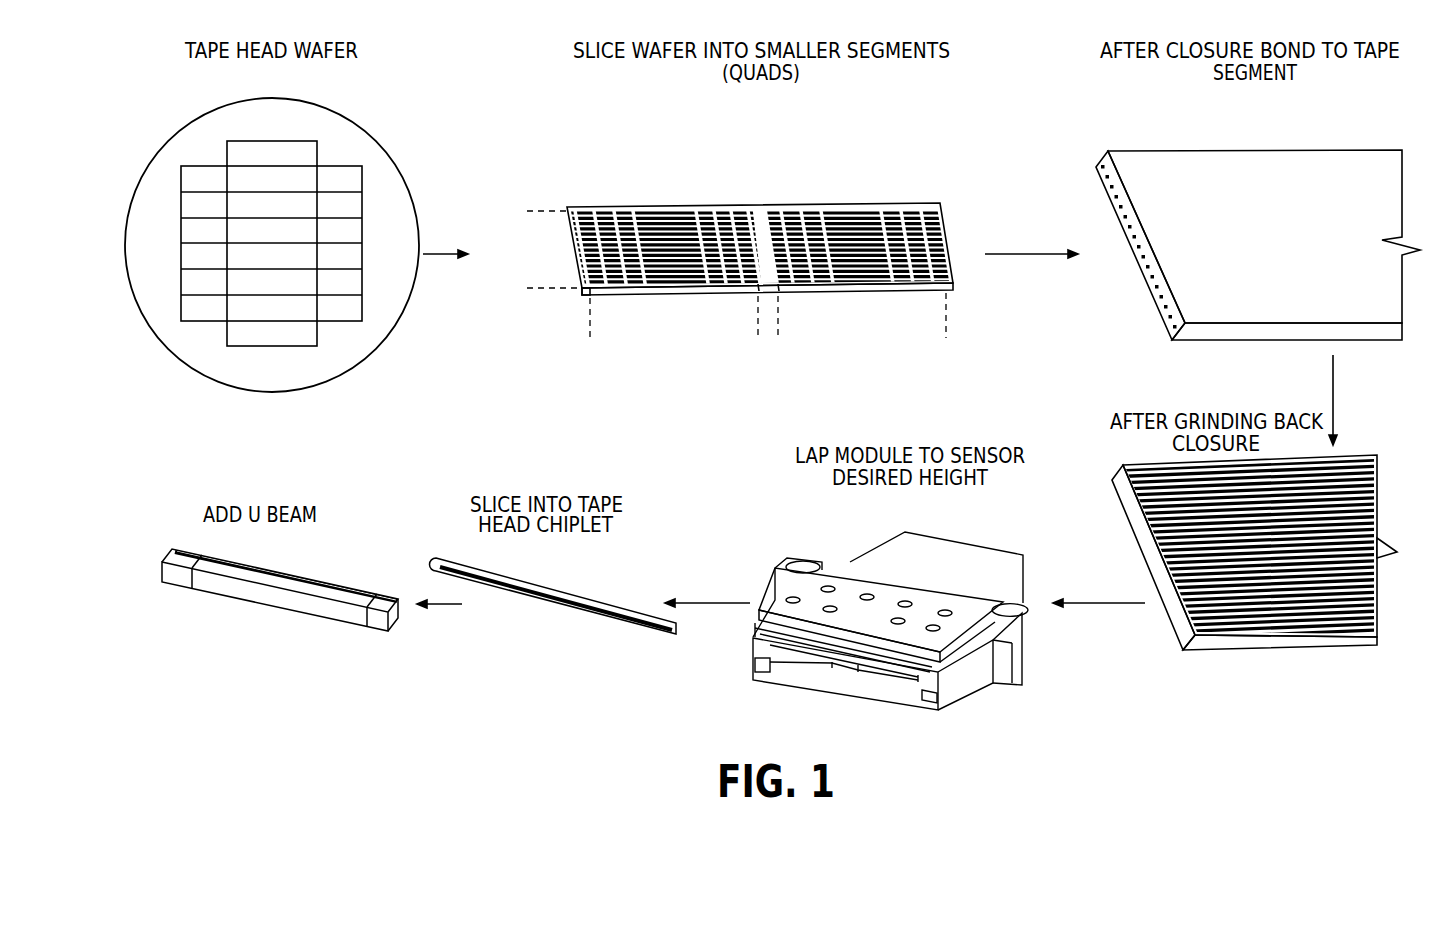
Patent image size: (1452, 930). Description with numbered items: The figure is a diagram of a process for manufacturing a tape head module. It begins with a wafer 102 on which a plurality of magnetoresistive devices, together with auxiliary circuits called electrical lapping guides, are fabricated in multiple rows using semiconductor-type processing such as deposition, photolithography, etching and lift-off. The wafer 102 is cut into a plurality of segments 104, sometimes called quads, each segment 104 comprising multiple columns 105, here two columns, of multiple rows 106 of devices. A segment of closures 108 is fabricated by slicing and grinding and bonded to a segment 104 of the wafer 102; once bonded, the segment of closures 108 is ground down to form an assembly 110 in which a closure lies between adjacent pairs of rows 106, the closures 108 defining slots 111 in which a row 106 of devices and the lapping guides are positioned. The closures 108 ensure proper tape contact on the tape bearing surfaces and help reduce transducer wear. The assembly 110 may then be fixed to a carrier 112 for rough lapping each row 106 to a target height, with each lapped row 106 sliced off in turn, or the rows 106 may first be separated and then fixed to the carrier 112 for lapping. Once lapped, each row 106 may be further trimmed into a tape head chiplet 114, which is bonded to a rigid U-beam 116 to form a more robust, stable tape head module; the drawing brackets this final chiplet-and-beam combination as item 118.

The wafer 102 is at (347, 138).
The segment 104 is at (938, 210).
The column 105 is at (758, 338).
The row 106 is at (530, 211).
The segment of closures 108 is at (1322, 165).
The assembly 110 is at (1220, 646).
The slot 111 is at (1154, 564).
The carrier 112 is at (828, 582).
The tape head chiplet 114 is at (628, 627).
The U-beam 116 is at (403, 617).
The tape head assembly 118 is at (156, 550).